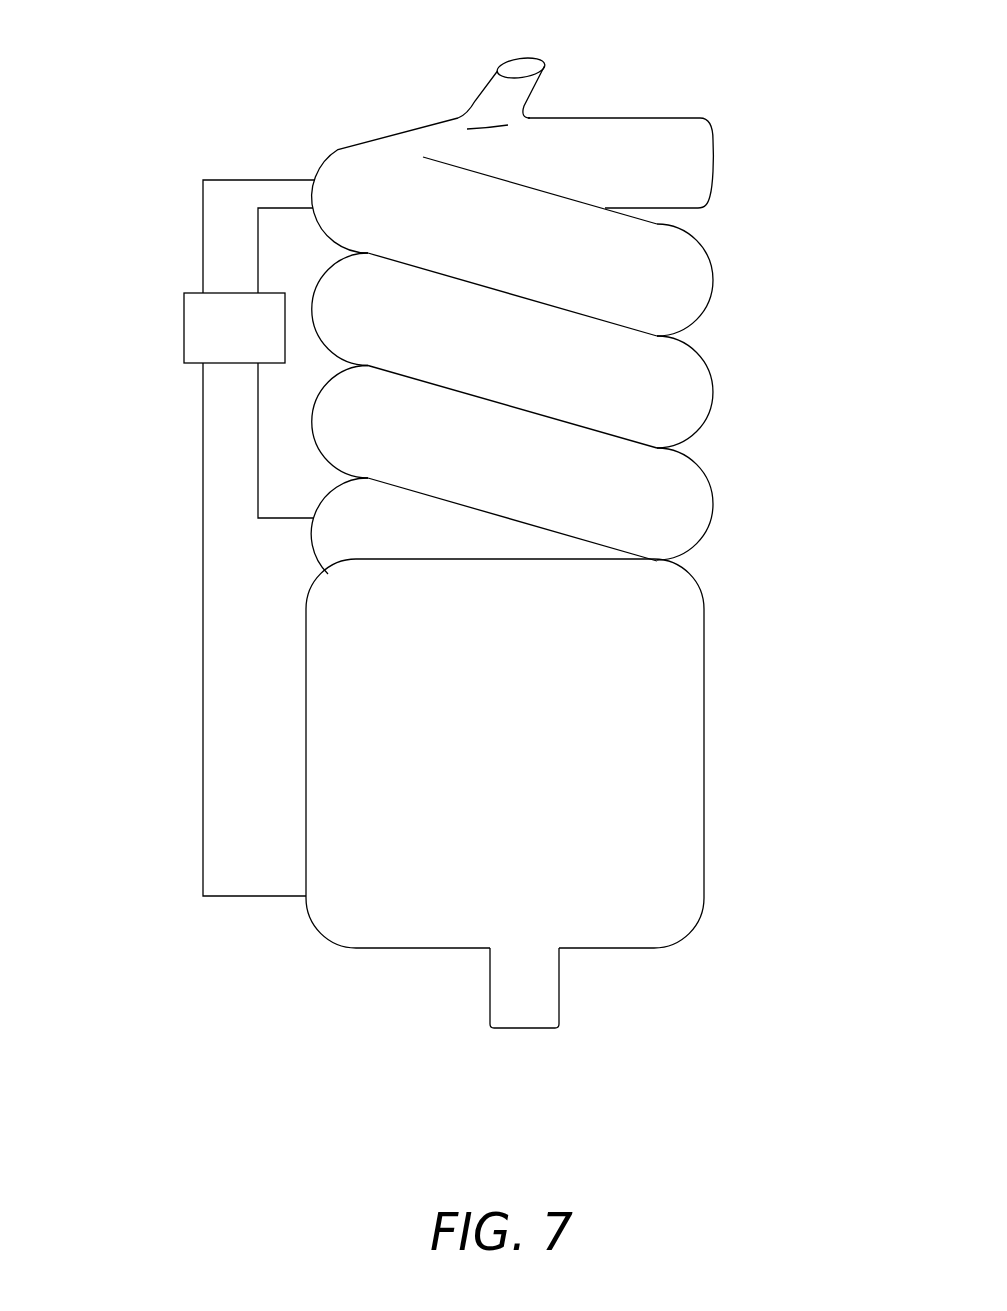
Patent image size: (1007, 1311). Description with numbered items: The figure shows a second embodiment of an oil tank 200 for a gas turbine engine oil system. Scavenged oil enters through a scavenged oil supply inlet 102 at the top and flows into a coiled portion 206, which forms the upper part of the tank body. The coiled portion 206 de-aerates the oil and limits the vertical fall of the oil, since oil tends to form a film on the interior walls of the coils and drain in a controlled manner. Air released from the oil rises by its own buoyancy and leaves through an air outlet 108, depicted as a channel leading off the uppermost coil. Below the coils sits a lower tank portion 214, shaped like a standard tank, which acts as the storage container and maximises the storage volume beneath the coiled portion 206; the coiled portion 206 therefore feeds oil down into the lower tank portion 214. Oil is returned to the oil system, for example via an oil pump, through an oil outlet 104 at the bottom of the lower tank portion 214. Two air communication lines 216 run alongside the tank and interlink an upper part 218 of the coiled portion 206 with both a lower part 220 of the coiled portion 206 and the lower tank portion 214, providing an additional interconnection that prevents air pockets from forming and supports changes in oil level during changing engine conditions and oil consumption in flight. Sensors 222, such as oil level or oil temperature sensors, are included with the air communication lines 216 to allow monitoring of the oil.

The oil tank 200 is at (159, 102).
The scavenged oil supply inlet 102 is at (713, 148).
The air outlet 108 is at (543, 82).
The coiled portion 206 is at (489, 297).
The upper part of the coiled portion 218 is at (337, 148).
The lower part of the coiled portion 220 is at (311, 538).
The lower tank portion 214 is at (704, 753).
The oil outlet 104 is at (559, 1012).
The sensors 222 is at (184, 313).
The air communication lines 216 is at (258, 410).